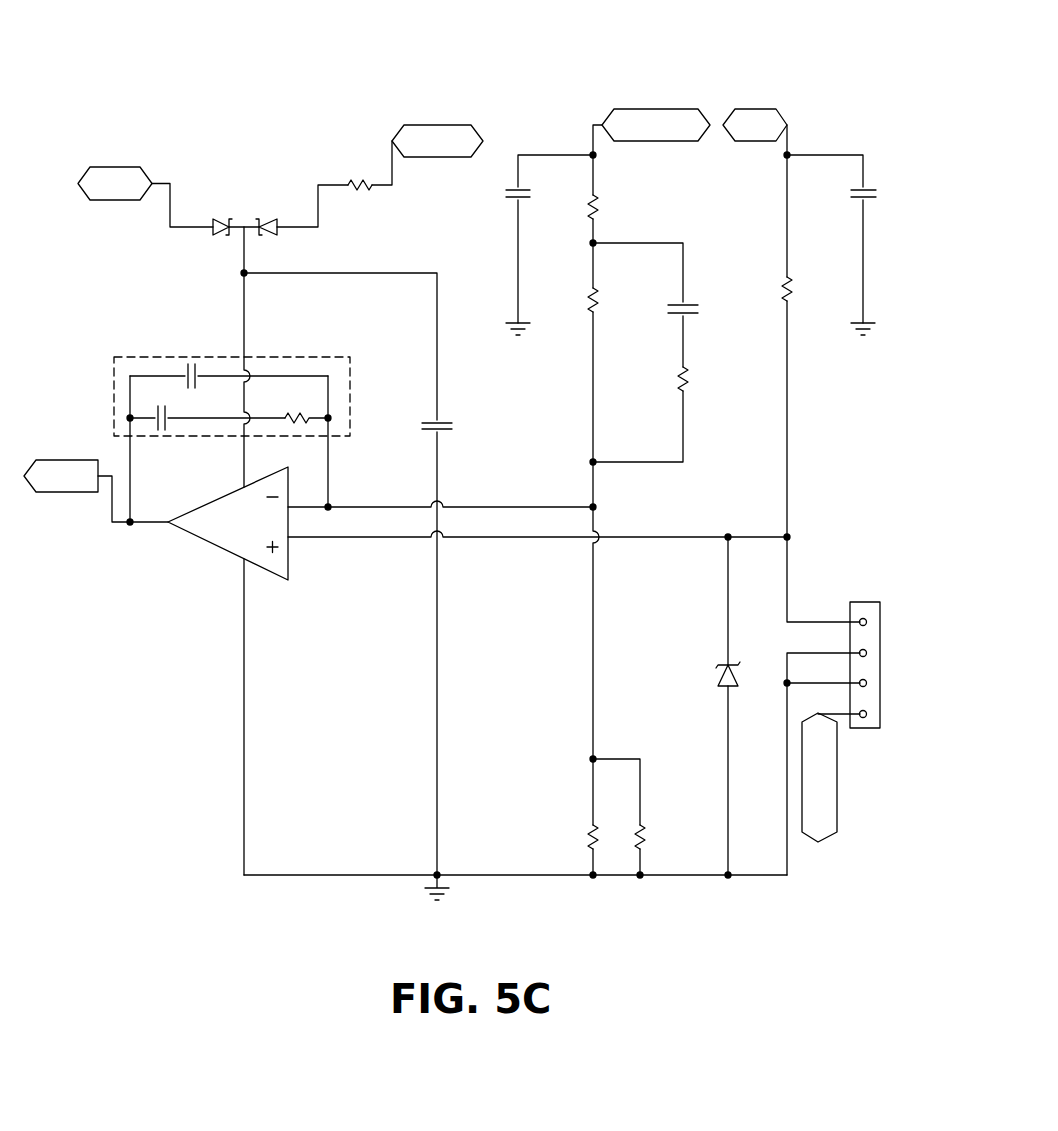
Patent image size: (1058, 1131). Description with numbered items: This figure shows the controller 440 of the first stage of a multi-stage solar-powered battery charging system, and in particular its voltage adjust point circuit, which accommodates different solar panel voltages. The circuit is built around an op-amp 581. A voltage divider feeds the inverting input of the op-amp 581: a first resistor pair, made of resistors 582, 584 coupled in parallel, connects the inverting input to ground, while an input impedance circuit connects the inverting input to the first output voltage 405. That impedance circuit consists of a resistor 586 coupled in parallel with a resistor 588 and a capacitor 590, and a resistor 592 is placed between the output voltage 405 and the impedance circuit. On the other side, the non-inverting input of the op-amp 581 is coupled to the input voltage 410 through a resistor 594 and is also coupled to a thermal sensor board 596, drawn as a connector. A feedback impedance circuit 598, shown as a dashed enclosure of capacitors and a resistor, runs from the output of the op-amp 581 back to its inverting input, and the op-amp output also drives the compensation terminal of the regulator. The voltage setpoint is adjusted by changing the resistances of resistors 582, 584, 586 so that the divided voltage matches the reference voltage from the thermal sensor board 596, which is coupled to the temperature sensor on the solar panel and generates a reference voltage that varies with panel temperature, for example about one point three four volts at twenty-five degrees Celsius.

The controller 440 is at (800, 45).
The first output voltage 405 is at (591, 153).
The input voltage 410 is at (790, 153).
The op-amp 581 is at (206, 540).
The resistor 582 is at (643, 828).
The resistor 584 is at (590, 828).
The resistor 586 is at (590, 296).
The resistor 588 is at (680, 380).
The capacitor 590 is at (674, 304).
The resistor 592 is at (598, 200).
The resistor 594 is at (783, 293).
The thermal sensor board 596 is at (862, 600).
The feedback impedance circuit 598 is at (113, 376).